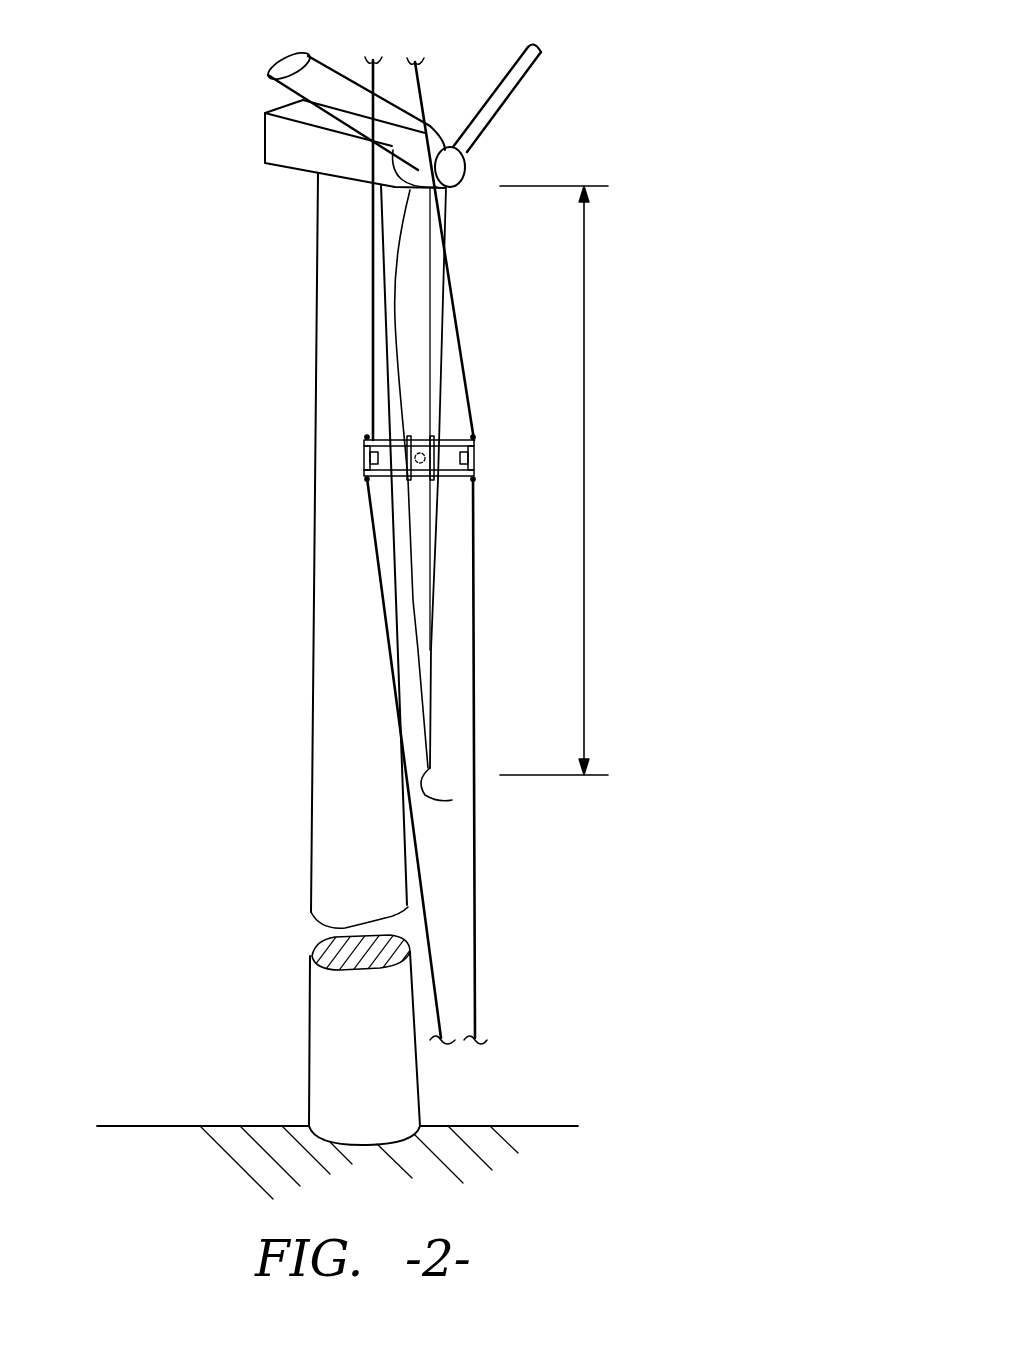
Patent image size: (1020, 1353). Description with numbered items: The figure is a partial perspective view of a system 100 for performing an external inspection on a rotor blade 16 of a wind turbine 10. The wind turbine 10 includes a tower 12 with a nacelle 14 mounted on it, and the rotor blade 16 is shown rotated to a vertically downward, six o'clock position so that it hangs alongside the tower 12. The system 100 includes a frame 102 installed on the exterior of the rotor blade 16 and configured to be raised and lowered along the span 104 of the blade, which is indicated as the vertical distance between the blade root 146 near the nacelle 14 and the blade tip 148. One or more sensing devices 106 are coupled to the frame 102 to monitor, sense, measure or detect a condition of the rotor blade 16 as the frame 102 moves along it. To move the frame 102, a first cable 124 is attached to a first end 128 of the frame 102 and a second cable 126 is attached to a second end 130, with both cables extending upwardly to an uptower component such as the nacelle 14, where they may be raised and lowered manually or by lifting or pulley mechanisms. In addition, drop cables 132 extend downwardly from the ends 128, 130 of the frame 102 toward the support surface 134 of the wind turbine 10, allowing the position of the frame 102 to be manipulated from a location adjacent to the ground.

The wind turbine 10 is at (272, 101).
The tower 12 is at (335, 1033).
The nacelle 14 is at (285, 140).
The rotor blade 16 is at (343, 67).
The system 100 is at (661, 282).
The frame 102 is at (447, 437).
The span 104 is at (591, 617).
The sensing device 106 is at (368, 457).
The first cable 124 is at (368, 350).
The second cable 126 is at (462, 355).
The first end 128 is at (367, 462).
The second end 130 is at (477, 462).
The drop cable 132 is at (433, 937).
The support surface 134 is at (505, 1125).
The blade root 146 is at (443, 198).
The blade tip 148 is at (452, 800).